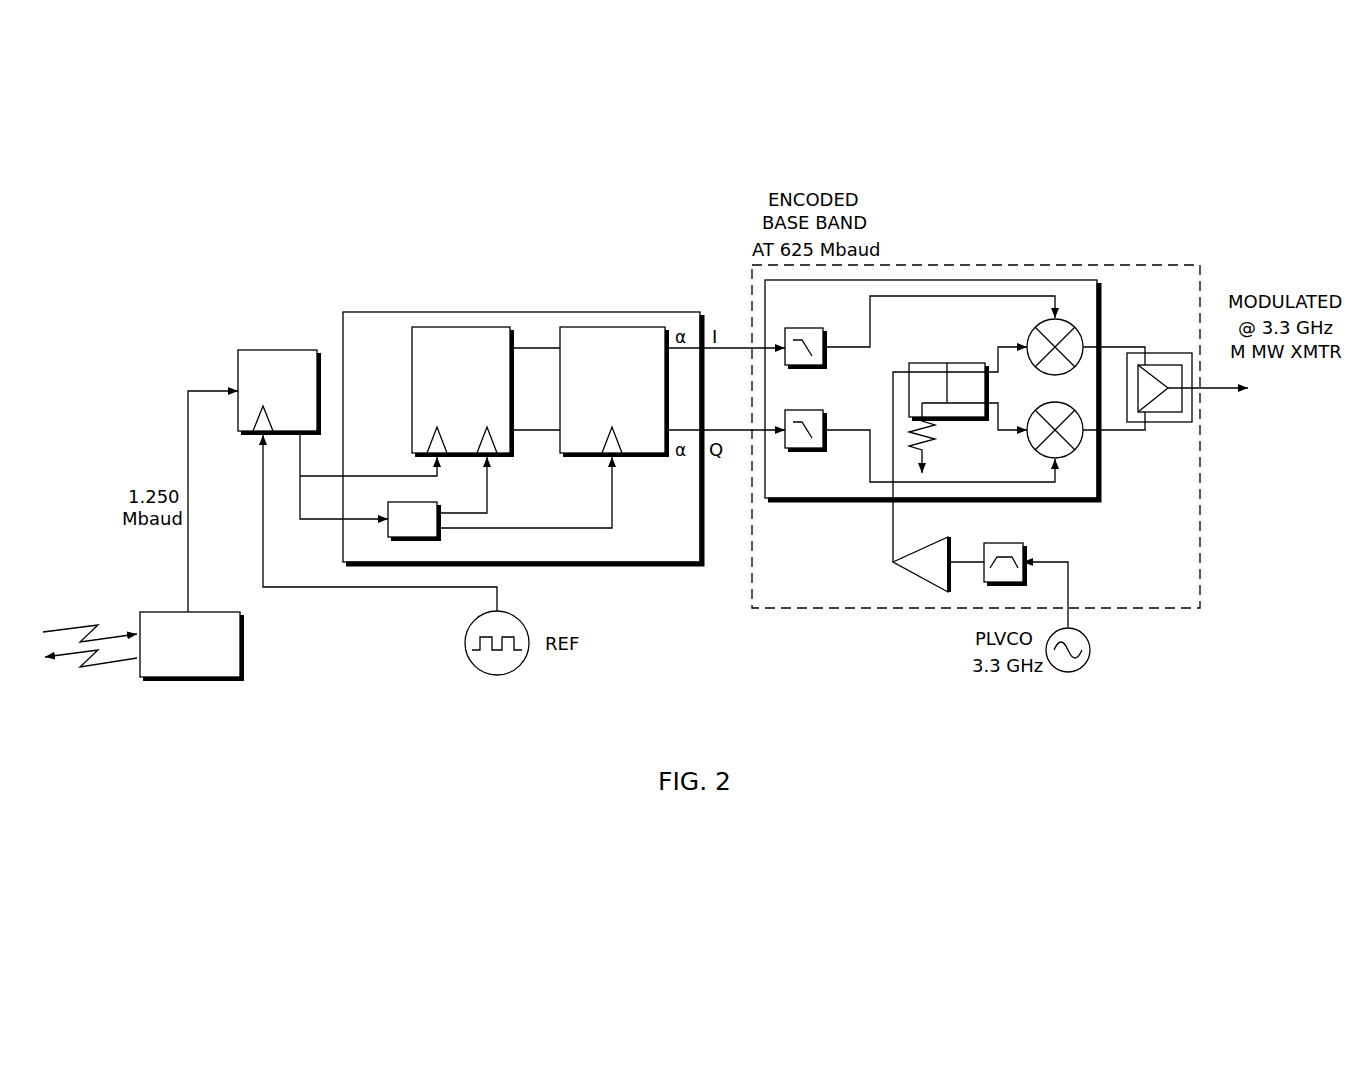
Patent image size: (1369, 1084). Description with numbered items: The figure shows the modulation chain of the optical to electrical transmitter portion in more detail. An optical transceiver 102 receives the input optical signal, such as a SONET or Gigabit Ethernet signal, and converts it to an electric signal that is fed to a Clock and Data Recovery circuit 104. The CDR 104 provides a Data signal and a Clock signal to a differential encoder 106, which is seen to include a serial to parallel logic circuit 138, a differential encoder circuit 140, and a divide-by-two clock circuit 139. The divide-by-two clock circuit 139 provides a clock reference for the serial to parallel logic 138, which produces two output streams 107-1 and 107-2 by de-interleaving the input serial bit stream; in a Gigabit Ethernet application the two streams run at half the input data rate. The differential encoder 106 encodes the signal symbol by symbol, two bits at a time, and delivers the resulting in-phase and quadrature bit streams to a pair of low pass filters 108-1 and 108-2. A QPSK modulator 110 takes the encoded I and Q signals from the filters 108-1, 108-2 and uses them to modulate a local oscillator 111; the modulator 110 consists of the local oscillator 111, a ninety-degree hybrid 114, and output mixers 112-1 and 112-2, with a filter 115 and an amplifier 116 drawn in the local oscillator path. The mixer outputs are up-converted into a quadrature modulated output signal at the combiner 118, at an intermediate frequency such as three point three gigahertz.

The optical transceiver 102 is at (182, 680).
The Clock and Data Recovery (CDR) circuit 104 is at (293, 350).
The differential encoder 106 is at (418, 312).
The output stream 107-1 is at (520, 348).
The output stream 107-2 is at (520, 430).
The low pass filter 108-1 is at (786, 328).
The low pass filter 108-2 is at (785, 448).
The QPSK modulator 110 is at (1018, 265).
The local oscillator 111 is at (1090, 634).
The output mixer 112-1 is at (1068, 322).
The output mixer 112-2 is at (1068, 457).
The 90-degree hybrid 114 is at (975, 363).
The band pass filter 115 is at (1008, 543).
The amplifier 116 is at (913, 577).
The combiner 118 is at (1182, 422).
The serial to parallel logic circuit 138 is at (462, 391).
The divide-by-two clock circuit 139 is at (435, 540).
The differential encoder circuit 140 is at (613, 391).